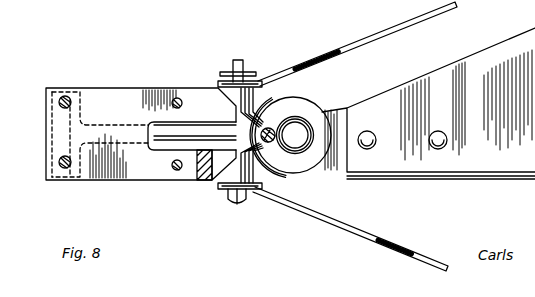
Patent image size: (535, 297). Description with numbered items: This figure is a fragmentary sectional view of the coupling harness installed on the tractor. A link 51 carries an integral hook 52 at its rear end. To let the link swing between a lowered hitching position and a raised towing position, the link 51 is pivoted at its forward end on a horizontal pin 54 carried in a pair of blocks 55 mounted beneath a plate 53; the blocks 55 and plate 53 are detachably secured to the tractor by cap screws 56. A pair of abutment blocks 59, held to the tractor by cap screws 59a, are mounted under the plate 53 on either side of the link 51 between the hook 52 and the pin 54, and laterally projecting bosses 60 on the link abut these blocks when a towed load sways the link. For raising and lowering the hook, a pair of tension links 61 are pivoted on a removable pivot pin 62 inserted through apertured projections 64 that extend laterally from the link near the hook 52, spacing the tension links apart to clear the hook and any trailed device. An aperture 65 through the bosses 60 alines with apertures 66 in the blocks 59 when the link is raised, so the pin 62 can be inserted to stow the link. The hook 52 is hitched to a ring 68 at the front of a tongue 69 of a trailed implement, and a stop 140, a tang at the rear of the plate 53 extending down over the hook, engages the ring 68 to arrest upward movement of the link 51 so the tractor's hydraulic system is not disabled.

The link 51 is at (160, 124).
The hook 52 is at (312, 180).
The plate 53 is at (125, 89).
The pin 54 is at (50, 130).
The blocks 55 is at (84, 99).
The cap screws 56 is at (65, 96).
The abutment blocks 59 is at (210, 100).
The cap screws 59a is at (176, 98).
The bosses 60 is at (180, 140).
The tension links 61 is at (367, 40).
The pivot pin 62 is at (238, 207).
The apertured projections 64 is at (257, 82).
The aperture 65 is at (193, 107).
The apertures 66 is at (198, 181).
The ring 68 is at (314, 107).
The tongue 69 is at (476, 72).
The stop 140 is at (272, 129).